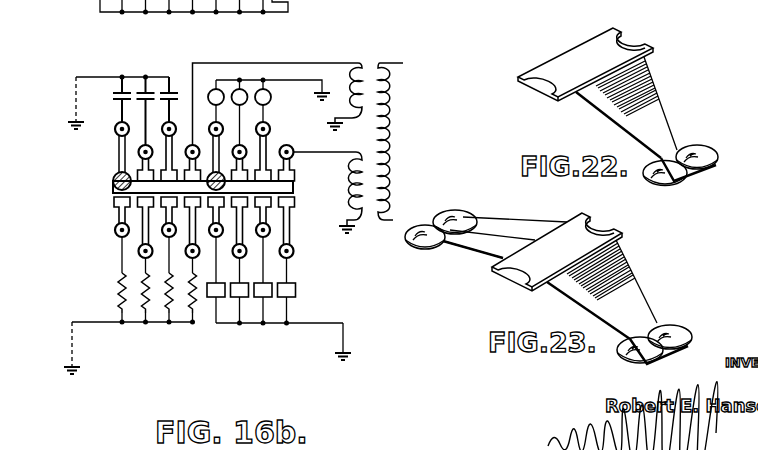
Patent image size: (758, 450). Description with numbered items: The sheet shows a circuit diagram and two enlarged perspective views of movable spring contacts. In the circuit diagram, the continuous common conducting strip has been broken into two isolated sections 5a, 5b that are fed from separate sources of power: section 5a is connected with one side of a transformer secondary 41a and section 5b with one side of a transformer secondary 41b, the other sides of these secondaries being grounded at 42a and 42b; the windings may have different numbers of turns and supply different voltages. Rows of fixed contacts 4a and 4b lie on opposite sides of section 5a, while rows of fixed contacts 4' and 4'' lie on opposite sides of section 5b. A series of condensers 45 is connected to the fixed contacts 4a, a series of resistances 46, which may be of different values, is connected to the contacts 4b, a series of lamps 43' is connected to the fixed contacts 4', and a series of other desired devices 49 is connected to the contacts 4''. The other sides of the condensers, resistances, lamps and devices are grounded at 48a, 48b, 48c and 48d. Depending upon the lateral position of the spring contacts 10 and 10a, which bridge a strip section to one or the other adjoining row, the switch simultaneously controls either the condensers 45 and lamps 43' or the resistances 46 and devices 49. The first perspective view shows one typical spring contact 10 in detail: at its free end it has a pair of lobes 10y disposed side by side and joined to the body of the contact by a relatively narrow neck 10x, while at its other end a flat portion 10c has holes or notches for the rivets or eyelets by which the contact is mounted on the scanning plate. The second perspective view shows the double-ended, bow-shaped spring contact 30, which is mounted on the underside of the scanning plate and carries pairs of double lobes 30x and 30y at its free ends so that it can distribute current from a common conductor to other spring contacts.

In FIG. 16B, the condensers 45 is at (168, 90).
In FIG. 16B, the lamps 43' is at (239, 93).
In FIG. 16B, the ground connection 48a is at (323, 92).
In FIG. 16B, the ground connection 48b is at (78, 121).
In FIG. 16B, the ground connection 48c is at (80, 372).
In FIG. 16B, the ground connection 48d is at (345, 352).
In FIG. 16B, the transformer secondary 41a is at (362, 72).
In FIG. 16B, the transformer secondary 41b is at (362, 206).
In FIG. 16B, the ground 42a is at (333, 131).
In FIG. 16B, the ground 42b is at (346, 234).
In FIG. 16B, the spring contact 10 is at (113, 181).
In FIG. 22, the spring contact 10 is at (647, 105).
In FIG. 16B, the spring contact 10a is at (221, 172).
In FIG. 16B, the common conducting strip section 5a is at (113, 191).
In FIG. 16B, the common conducting strip section 5b is at (293, 192).
In FIG. 16B, the fixed contacts 4a is at (169, 172).
In FIG. 16B, the fixed contacts 4b is at (143, 208).
In FIG. 16B, the fixed contacts 4' is at (296, 171).
In FIG. 16B, the fixed contacts 4'' is at (288, 216).
In FIG. 16B, the resistances 46 is at (144, 297).
In FIG. 16B, the devices 49 is at (262, 298).
In FIG. 22, the flat portion 10c is at (585, 62).
In FIG. 22, the neck 10x is at (672, 150).
In FIG. 23, the neck 10x is at (628, 340).
In FIG. 22, the lobes 10y is at (679, 188).
In FIG. 23, the spring contact 30 is at (612, 277).
In FIG. 23, the double lobes 30x is at (463, 216).
In FIG. 23, the double lobes 30y is at (673, 328).